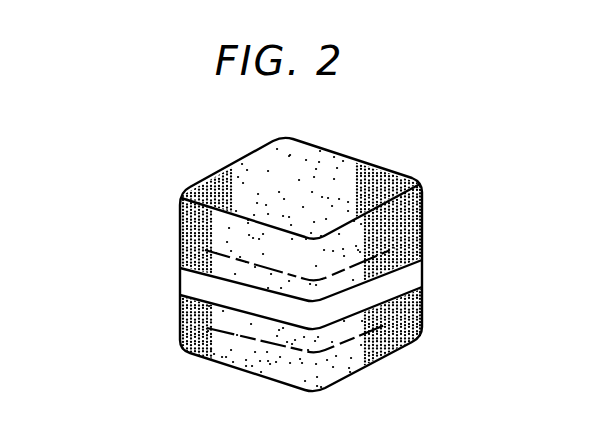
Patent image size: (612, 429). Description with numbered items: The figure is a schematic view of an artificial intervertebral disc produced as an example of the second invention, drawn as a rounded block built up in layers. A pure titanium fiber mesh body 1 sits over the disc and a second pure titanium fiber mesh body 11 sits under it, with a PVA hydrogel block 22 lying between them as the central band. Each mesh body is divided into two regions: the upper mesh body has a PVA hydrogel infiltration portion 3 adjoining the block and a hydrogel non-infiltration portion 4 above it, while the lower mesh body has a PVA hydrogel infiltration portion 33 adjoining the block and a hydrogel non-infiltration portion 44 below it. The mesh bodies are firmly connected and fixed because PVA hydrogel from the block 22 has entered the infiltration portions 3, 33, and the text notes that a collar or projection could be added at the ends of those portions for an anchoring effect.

The pure titanium fiber mesh body 1 is at (116, 162).
The hydrogel non-infiltration portion 4 is at (178, 215).
The PVA hydrogel infiltration portion 3 is at (178, 250).
The PVA hydrogel block 22 is at (412, 272).
The pure titanium fiber mesh body 11 is at (109, 277).
The PVA hydrogel infiltration portion 33 is at (180, 302).
The hydrogel non-infiltration portion 44 is at (180, 342).